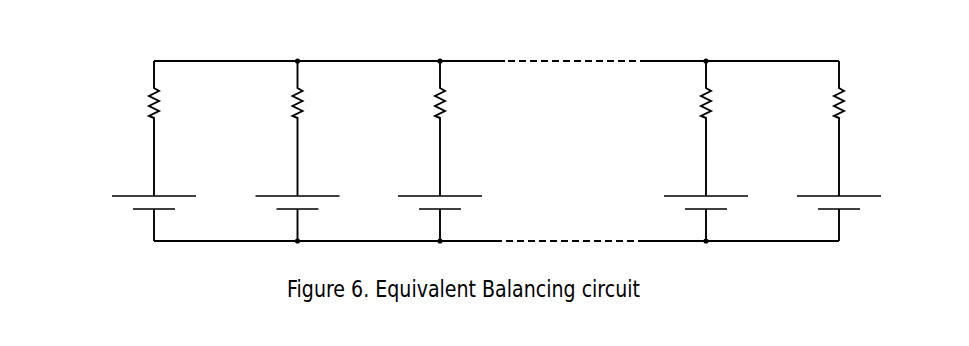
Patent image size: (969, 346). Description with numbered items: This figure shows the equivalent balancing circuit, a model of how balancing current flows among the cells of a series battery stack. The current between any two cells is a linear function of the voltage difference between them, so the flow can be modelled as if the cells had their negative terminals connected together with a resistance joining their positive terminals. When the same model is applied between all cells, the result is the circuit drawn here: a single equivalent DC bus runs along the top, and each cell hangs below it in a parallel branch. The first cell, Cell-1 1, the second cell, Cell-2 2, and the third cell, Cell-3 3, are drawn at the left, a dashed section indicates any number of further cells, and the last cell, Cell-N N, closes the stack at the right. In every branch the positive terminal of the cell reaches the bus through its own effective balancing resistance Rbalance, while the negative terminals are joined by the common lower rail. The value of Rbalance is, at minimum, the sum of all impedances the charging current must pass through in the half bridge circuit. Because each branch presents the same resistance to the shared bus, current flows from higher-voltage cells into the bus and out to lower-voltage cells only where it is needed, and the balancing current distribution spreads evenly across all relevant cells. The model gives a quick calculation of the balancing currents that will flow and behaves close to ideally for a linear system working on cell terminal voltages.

The equivalent DC bus is at (412, 32).
The effective balancing resistance Rbalance is at (461, 110).
The first cell Cell-1 is at (145, 200).
The first cell 1 is at (145, 200).
The second cell Cell-2 is at (288, 200).
The second cell 2 is at (288, 200).
The third cell Cell-3 is at (431, 200).
The third cell 3 is at (431, 200).
The last cell Cell-N is at (829, 200).
The last cell N is at (829, 200).